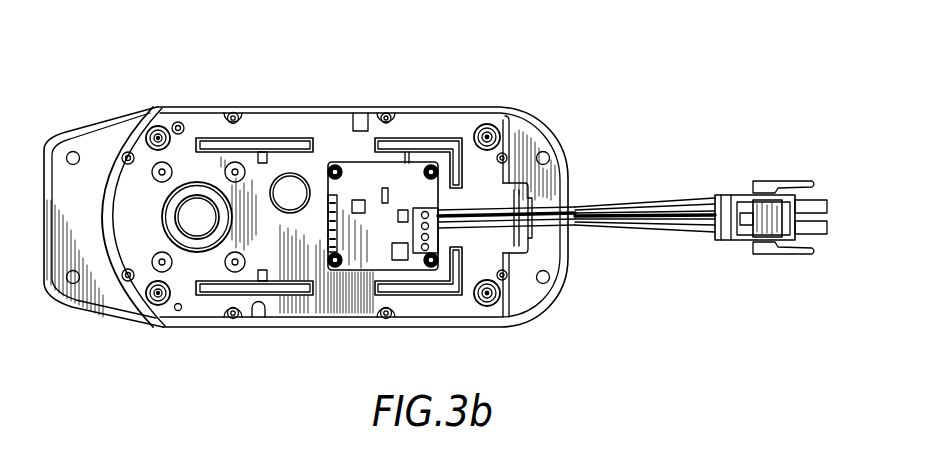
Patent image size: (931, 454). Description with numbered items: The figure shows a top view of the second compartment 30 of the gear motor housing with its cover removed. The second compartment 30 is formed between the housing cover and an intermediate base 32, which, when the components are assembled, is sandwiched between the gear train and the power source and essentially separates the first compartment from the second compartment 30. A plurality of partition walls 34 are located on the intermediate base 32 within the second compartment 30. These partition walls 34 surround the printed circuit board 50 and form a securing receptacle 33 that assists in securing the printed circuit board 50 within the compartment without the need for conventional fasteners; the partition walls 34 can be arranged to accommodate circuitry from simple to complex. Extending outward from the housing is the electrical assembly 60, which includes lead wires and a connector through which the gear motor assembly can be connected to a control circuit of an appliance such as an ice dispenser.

The second compartment 30 is at (311, 59).
The intermediate base 32 is at (335, 150).
The securing receptacle 33 is at (443, 177).
The partition walls 34 is at (283, 140).
The printed circuit board 50 is at (403, 190).
The electrical assembly 60 is at (781, 165).